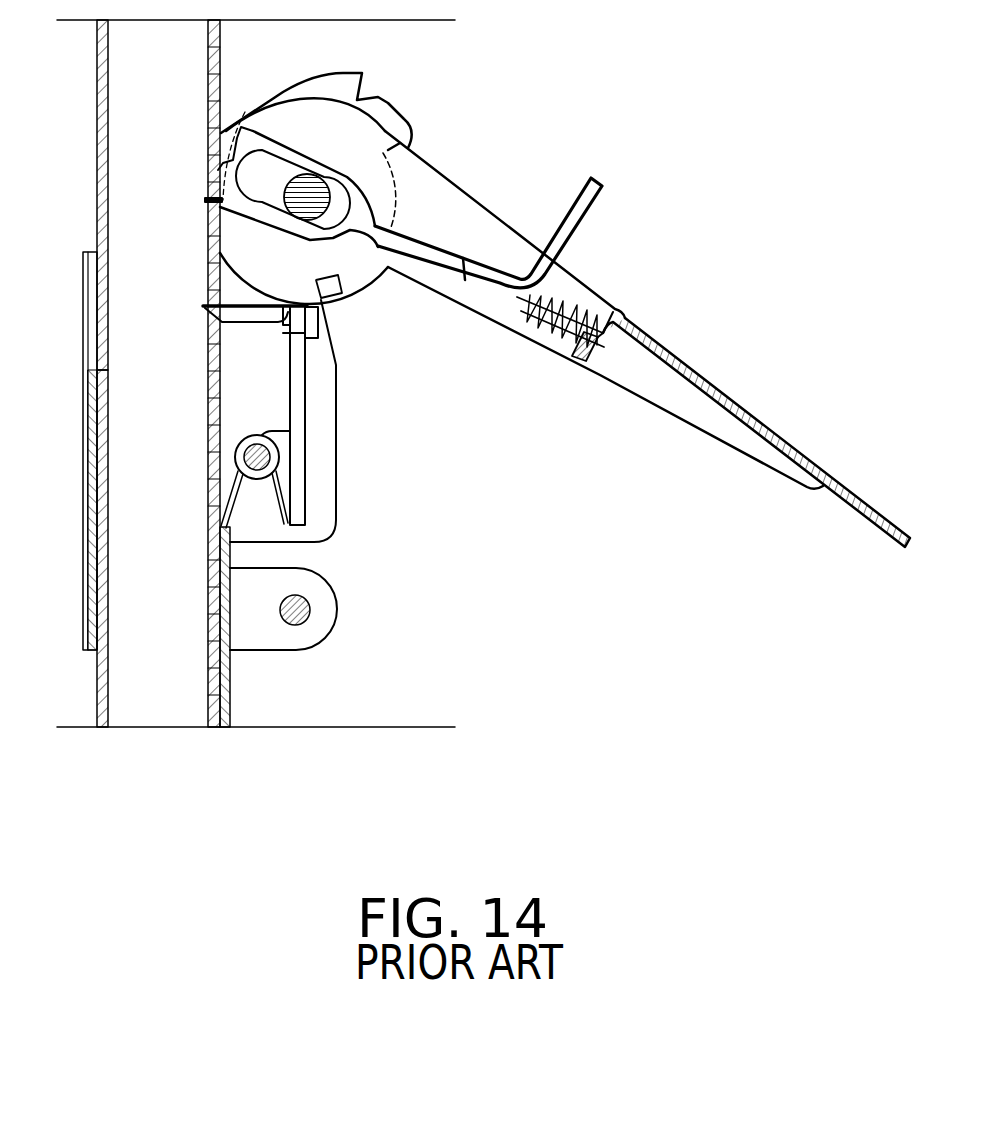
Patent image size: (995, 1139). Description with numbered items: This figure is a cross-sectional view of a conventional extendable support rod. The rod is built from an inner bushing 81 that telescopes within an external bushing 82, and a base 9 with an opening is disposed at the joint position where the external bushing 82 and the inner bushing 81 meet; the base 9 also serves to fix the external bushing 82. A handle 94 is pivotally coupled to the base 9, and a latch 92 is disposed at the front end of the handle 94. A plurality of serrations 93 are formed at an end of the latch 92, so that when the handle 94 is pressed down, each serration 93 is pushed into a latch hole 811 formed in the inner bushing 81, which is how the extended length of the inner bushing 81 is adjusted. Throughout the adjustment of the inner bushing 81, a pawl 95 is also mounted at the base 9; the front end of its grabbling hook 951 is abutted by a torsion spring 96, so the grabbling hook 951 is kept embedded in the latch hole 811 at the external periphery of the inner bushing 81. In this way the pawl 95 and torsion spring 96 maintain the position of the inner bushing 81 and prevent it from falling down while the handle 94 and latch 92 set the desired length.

The inner bushing 81 is at (96, 127).
The external bushing 82 is at (95, 690).
The base 9 is at (83, 327).
The latch hole 811 is at (213, 238).
The grabbling hook 951 is at (242, 312).
The pawl 95 is at (295, 363).
The torsion spring 96 is at (228, 475).
The serration 93 is at (238, 127).
The latch 92 is at (479, 242).
The handle 94 is at (690, 395).